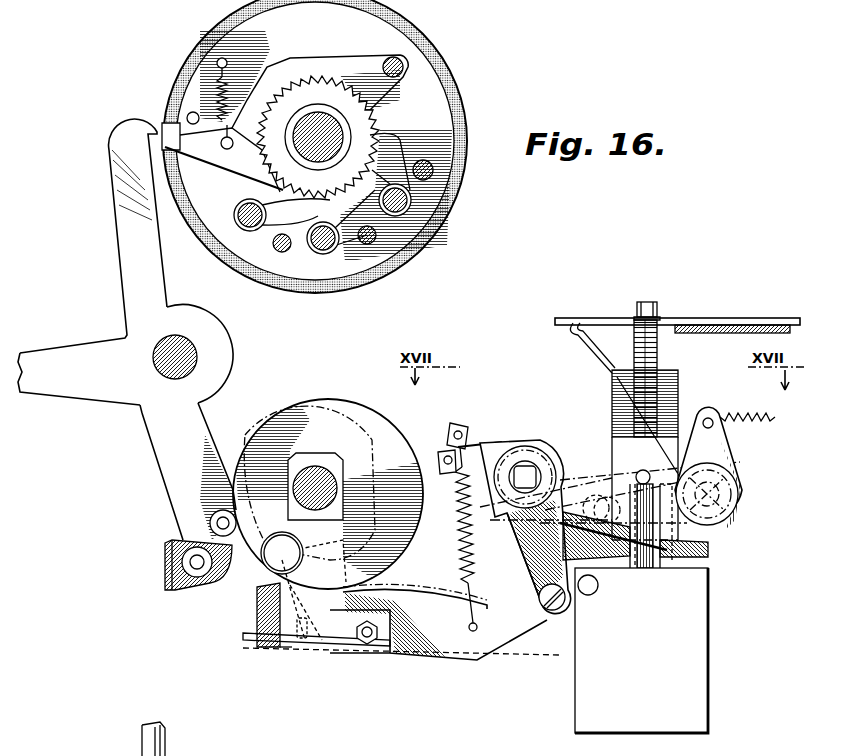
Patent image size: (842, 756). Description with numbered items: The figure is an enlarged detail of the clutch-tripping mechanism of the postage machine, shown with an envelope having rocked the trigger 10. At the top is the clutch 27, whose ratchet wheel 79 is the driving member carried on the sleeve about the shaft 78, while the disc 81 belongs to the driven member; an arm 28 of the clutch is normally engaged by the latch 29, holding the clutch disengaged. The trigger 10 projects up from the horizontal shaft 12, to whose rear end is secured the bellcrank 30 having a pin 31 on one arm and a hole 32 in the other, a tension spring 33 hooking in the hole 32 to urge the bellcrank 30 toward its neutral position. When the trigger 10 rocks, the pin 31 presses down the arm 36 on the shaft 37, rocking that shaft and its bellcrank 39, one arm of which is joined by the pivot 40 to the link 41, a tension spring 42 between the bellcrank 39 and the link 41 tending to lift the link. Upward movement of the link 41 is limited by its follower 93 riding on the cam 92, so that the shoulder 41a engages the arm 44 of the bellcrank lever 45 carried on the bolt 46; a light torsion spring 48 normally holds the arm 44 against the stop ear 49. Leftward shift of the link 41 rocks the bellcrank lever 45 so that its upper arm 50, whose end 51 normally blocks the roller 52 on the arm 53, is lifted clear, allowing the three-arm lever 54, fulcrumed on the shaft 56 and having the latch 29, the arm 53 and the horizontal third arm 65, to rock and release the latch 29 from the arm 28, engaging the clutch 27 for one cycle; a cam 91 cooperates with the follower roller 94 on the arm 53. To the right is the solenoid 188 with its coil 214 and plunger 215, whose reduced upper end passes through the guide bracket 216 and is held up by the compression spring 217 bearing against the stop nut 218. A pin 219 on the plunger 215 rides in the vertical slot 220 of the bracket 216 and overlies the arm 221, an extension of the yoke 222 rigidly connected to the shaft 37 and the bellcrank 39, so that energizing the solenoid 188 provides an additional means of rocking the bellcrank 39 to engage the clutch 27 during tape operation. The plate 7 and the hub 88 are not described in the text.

The plate 7 is at (720, 328).
The trigger 10 is at (586, 348).
The horizontal shaft 12 is at (725, 494).
The clutch 27 is at (421, 104).
The arm 28 is at (200, 155).
The latch 29 is at (110, 145).
The bellcrank 30 is at (735, 457).
The pin 31 is at (606, 500).
The hole 32 is at (712, 420).
The tension spring 33 is at (773, 424).
The arm 36 is at (710, 548).
The shaft 37 is at (527, 475).
The bellcrank 39 is at (528, 557).
The pivot 40 is at (556, 611).
The link 41 is at (425, 632).
The shoulder 41a is at (286, 652).
The tension spring 42 is at (460, 500).
The arm 44 is at (268, 650).
The bellcrank lever 45 is at (257, 603).
The bolt 46 is at (260, 563).
The torsion spring 48 is at (302, 606).
The stop ear 49 is at (308, 634).
The upper arm 50 is at (256, 528).
The end 51 is at (218, 523).
The roller 52 is at (200, 572).
The arm 53 is at (182, 492).
The three-arm lever 54 is at (140, 412).
The shaft 56 is at (200, 360).
The third arm 65 is at (45, 362).
The shaft 78 is at (308, 152).
The ratchet wheel 79 is at (330, 77).
The disc 81 is at (243, 48).
The hub 88 is at (322, 478).
The cam 91 is at (396, 445).
The cam 92 is at (262, 438).
The follower 93 is at (332, 562).
The follower roller 94 is at (220, 508).
The solenoid 188 is at (710, 690).
The coil 214 is at (705, 612).
The plunger 215 is at (641, 568).
The guide bracket 216 is at (622, 437).
The compression spring 217 is at (659, 350).
The stop nut 218 is at (636, 310).
The pin 219 is at (640, 476).
The vertical slot 220 is at (700, 530).
The arm 221 is at (668, 562).
The yoke 222 is at (487, 440).